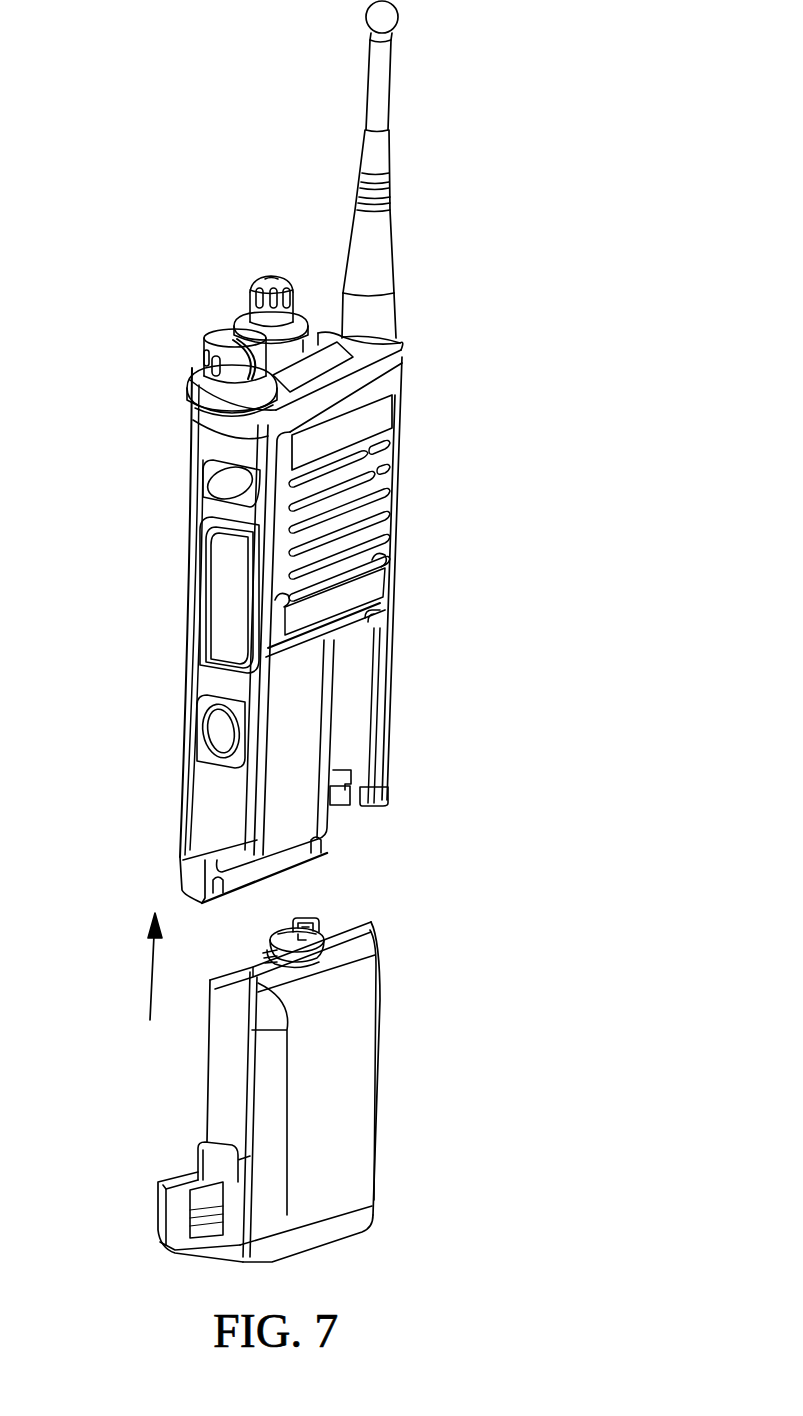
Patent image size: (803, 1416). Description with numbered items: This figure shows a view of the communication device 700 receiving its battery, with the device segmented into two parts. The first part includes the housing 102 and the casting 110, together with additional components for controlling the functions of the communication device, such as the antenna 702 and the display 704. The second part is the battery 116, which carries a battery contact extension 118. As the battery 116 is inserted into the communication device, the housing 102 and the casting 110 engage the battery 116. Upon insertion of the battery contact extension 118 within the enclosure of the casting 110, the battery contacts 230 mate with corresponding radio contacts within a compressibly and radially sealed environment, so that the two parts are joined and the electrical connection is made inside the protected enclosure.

The portable radio communication device 700 is at (86, 174).
The antenna 702 is at (372, 250).
The display 704 is at (350, 422).
The housing 102 is at (180, 771).
The casting 110 is at (303, 737).
The battery 116 is at (213, 1092).
The battery contact extension 118 is at (258, 928).
The battery contacts 230 is at (283, 923).